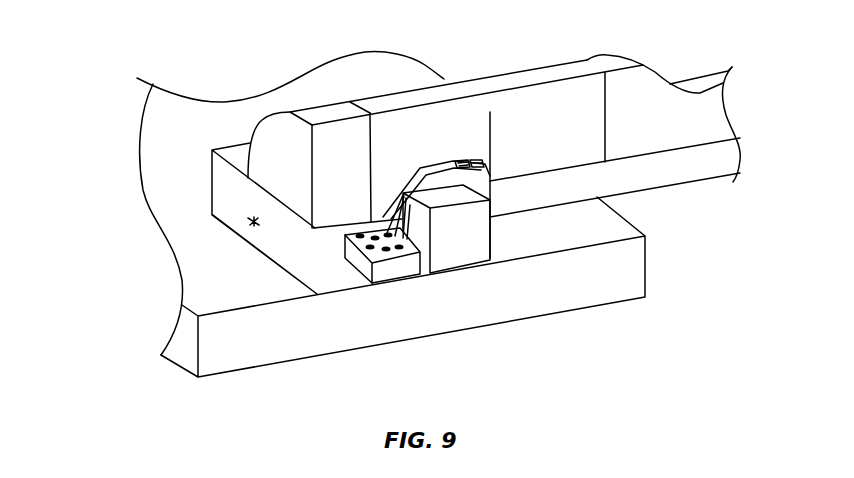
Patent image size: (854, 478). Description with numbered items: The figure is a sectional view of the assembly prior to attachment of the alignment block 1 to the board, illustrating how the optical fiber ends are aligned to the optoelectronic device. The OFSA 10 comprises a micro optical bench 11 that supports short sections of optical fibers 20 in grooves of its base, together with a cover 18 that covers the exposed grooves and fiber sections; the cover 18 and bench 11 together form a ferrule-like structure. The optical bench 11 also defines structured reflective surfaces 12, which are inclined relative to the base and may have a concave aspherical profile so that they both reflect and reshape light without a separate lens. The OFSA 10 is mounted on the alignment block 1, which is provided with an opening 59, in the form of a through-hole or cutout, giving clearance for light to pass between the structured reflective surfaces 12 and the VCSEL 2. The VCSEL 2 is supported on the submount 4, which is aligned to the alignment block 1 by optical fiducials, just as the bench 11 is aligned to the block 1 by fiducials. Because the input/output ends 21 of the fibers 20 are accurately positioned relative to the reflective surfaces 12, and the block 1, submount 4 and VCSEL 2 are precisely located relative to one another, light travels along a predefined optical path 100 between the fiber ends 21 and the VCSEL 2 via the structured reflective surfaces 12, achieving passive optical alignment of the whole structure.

The alignment block 1 is at (218, 185).
The VCSEL 2 is at (399, 270).
The submount 4 is at (647, 262).
The OFSA 10 is at (662, 33).
The micro optical bench 11 is at (490, 112).
The structured reflective surface 12 is at (410, 193).
The cover 18 is at (690, 172).
The optical fiber 20 is at (470, 155).
The input/output end of the optical fiber 21 is at (452, 160).
The opening 59 is at (345, 268).
The optical path 100 is at (417, 273).